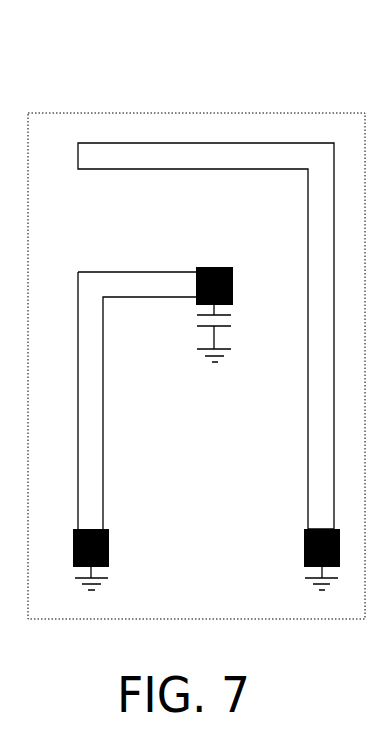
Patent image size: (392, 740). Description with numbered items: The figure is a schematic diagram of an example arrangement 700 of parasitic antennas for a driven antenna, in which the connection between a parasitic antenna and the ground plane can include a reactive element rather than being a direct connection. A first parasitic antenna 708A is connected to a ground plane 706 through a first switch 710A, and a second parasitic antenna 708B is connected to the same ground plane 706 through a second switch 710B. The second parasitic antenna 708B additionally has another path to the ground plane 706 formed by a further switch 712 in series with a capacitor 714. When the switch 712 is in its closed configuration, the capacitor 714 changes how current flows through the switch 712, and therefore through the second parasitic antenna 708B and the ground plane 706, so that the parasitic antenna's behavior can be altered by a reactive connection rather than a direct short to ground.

The arrangement 700 is at (95, 59).
The ground plane 706 is at (223, 592).
The first parasitic antenna 708A is at (308, 364).
The second parasitic antenna 708B is at (79, 272).
The first switch 710A is at (304, 555).
The second switch 710B is at (109, 555).
The switch 712 is at (233, 283).
The capacitor 714 is at (190, 322).